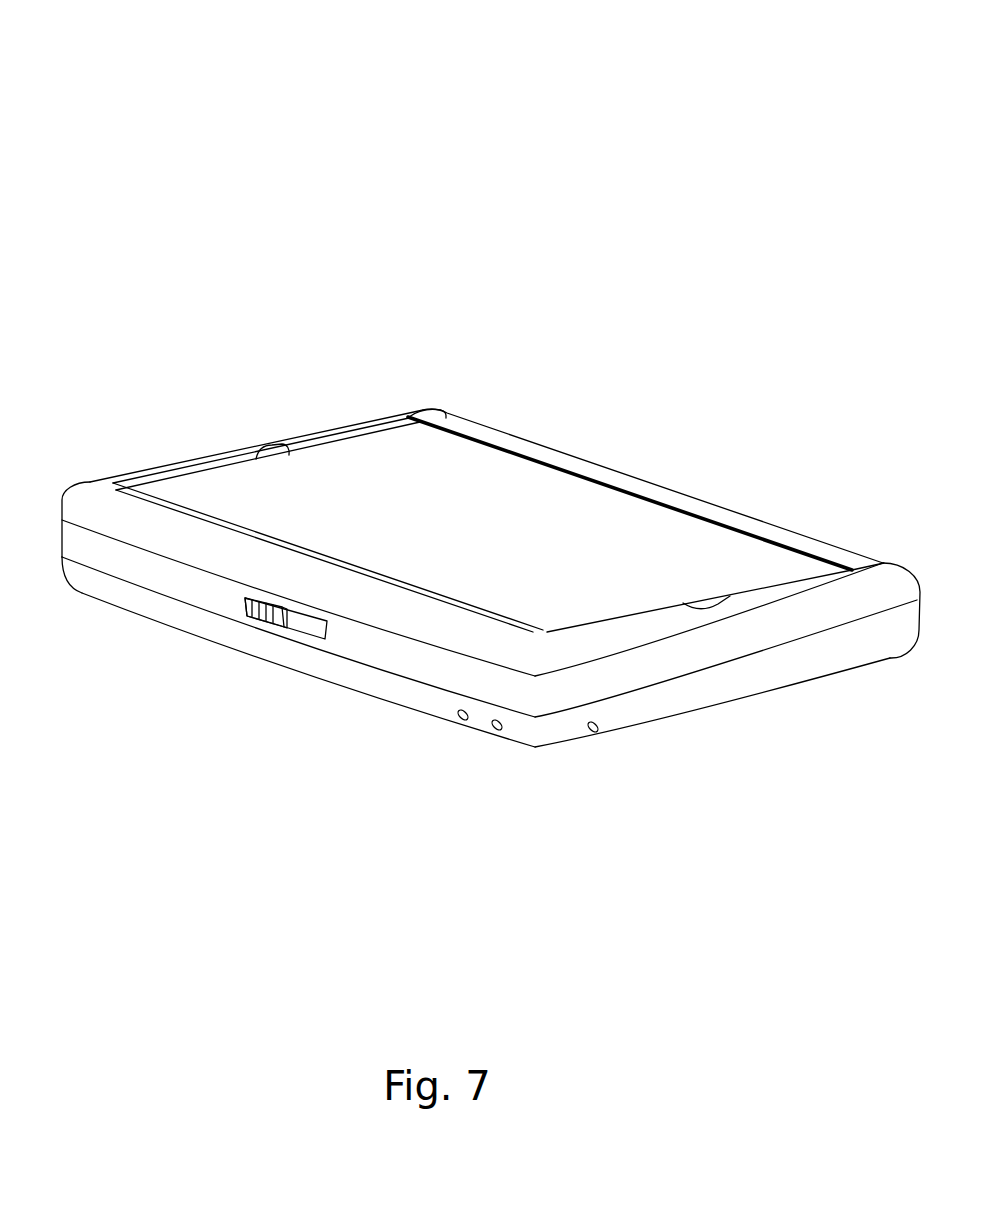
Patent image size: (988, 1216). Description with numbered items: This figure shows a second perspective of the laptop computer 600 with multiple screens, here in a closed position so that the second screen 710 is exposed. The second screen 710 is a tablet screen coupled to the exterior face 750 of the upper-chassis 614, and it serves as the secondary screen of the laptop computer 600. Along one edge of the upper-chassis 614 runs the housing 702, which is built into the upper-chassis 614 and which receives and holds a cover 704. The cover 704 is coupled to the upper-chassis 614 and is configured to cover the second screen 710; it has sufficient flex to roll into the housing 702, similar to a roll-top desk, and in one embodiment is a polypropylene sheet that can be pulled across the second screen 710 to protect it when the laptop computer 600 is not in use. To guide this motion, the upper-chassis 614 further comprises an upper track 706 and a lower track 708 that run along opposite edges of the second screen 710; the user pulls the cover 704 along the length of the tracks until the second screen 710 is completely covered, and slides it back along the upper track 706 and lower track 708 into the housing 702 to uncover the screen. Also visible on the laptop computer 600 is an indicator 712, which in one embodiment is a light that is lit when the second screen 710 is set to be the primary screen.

The laptop computer 600 is at (110, 106).
The housing 702 is at (187, 461).
The cover 704 is at (341, 434).
The upper track 706 is at (447, 412).
The lower track 708 is at (331, 556).
The second screen 710 is at (470, 555).
The indicator 712 is at (597, 735).
The exterior face 750 is at (520, 440).
The upper-chassis 614 is at (748, 510).